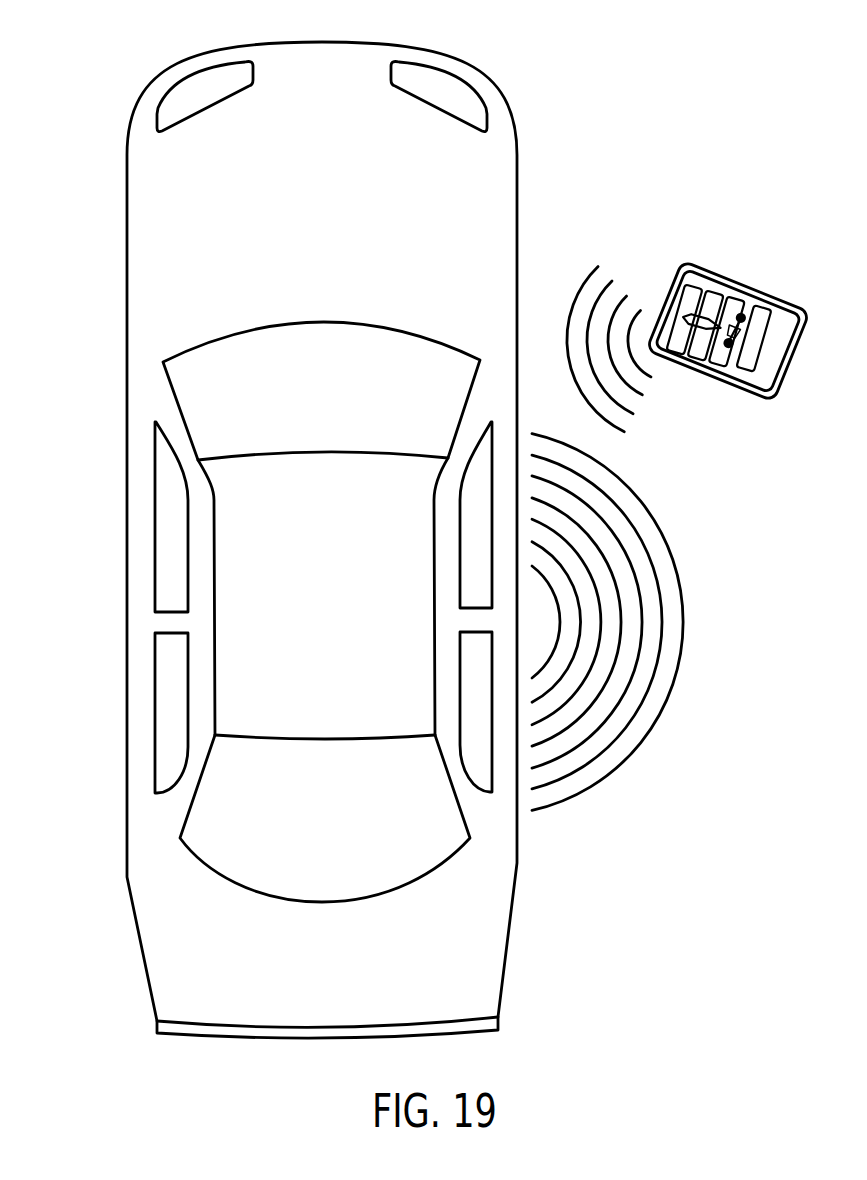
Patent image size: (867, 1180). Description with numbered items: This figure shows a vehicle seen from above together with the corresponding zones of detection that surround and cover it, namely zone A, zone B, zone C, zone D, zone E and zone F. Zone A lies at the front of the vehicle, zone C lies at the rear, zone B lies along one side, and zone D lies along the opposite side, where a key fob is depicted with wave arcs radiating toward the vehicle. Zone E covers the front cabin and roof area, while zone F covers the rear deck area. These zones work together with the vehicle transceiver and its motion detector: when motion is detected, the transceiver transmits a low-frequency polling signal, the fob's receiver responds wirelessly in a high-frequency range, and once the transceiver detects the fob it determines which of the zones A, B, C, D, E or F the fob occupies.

The zone A is at (322, 69).
The zone B is at (113, 607).
The zone C is at (327, 1044).
The zone D is at (607, 622).
The zone E is at (321, 530).
The zone F is at (325, 858).